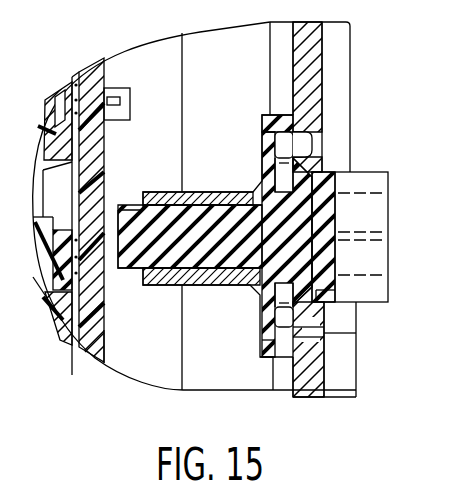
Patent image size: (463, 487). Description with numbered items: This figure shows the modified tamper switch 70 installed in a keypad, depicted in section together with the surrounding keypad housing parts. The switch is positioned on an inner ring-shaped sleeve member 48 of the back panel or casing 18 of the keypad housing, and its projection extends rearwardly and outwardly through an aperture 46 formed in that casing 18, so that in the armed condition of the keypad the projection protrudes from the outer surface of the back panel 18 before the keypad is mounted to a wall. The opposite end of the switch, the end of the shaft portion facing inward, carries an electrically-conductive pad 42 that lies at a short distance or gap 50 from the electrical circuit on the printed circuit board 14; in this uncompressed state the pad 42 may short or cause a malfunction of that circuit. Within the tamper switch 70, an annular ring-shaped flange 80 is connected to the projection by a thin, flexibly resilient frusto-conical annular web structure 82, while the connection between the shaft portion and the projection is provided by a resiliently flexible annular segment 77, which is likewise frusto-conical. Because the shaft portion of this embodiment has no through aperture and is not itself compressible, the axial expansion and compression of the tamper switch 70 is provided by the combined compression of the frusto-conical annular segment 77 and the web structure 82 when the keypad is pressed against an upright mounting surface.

The printed circuit board 14 is at (89, 63).
The back panel or casing 18 is at (313, 44).
The electrically-conductive pad 42 is at (44, 294).
The aperture 46 is at (313, 157).
The inner ring-shaped sleeve member 48 is at (176, 188).
The gap 50 is at (108, 340).
The tamper switch 70 is at (380, 168).
The resiliently flexible annular segment 77 is at (335, 276).
The annular ring-shaped flange 80 is at (278, 333).
The frusto-conical annular web structure 82 is at (325, 333).